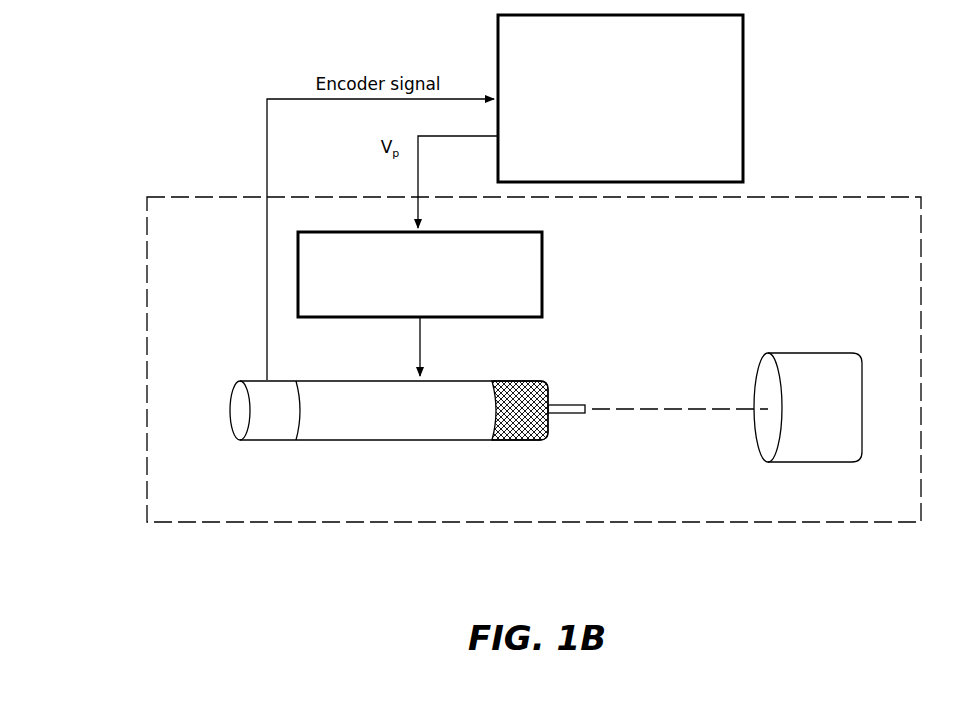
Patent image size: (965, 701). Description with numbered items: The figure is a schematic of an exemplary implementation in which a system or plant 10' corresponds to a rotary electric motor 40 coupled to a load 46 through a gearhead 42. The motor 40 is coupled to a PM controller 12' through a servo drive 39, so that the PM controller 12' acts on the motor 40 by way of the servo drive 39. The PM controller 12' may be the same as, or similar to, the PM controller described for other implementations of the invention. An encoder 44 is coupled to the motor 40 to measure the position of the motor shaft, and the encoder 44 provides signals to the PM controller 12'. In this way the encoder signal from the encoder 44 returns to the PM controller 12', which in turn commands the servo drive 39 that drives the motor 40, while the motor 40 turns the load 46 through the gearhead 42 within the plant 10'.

The system or plant 10' is at (537, 338).
The PM controller 12' is at (620, 98).
The servo drive 39 is at (408, 302).
The rotary electric motor 40 is at (460, 379).
The gearhead 42 is at (560, 403).
The encoder 44 is at (259, 379).
The load 46 is at (795, 356).